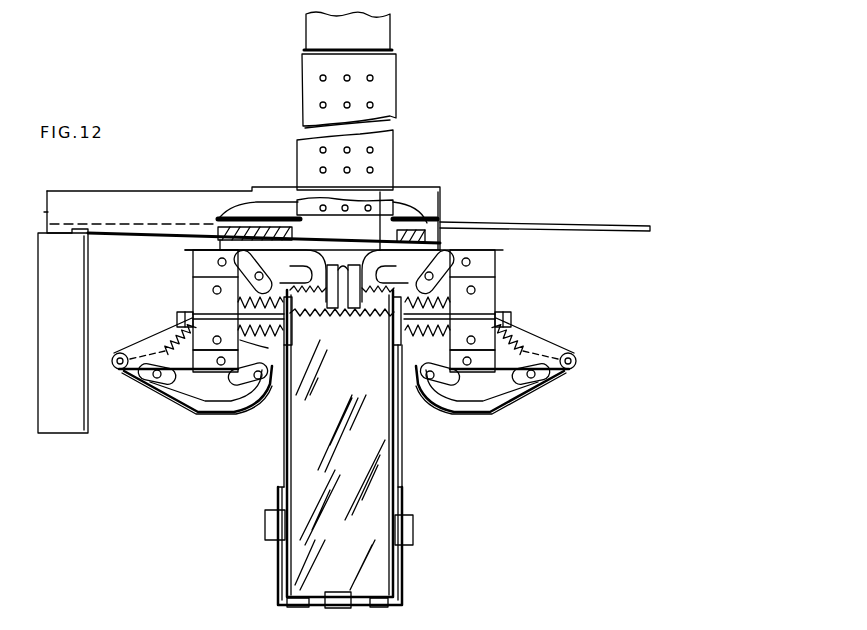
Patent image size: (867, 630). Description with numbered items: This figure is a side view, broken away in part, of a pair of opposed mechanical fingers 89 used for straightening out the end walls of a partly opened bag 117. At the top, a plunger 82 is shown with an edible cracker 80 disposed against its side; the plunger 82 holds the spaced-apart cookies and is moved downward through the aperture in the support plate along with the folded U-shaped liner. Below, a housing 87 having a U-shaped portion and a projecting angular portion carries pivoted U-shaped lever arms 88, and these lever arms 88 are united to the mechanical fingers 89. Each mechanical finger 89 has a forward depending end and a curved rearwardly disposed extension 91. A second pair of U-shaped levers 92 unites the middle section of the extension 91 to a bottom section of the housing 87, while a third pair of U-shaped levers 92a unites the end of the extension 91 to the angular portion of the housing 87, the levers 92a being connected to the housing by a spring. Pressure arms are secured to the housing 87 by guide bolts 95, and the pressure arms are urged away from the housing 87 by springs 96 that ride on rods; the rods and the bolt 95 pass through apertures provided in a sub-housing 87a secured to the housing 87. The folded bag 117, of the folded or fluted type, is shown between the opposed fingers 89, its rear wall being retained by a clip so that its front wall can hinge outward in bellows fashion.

The edible cracker 80 is at (302, 160).
The plunger 82 is at (384, 38).
The housing 87 is at (150, 345).
The sub-housing 87a is at (203, 298).
The U-shaped lever arm 88 is at (450, 258).
The mechanical finger 89 is at (216, 420).
The curved rearwardly disposed extension 91 is at (190, 398).
The second pair of U-shaped levers 92 is at (132, 378).
The third pair of U-shaped levers 92a is at (543, 386).
The guide bolt 95 is at (392, 332).
The spring 96 is at (268, 348).
The folded bag 117 is at (378, 424).